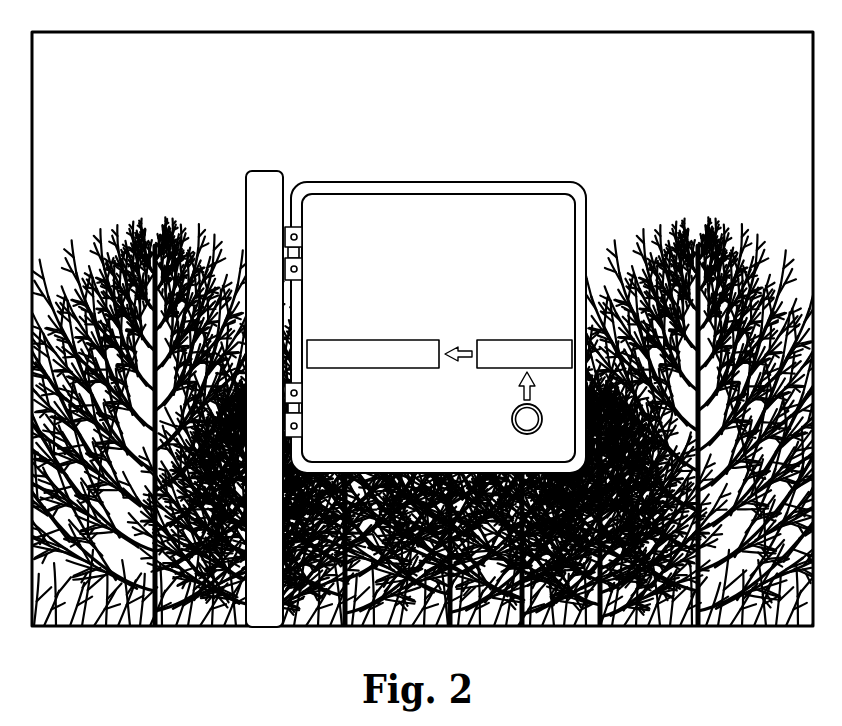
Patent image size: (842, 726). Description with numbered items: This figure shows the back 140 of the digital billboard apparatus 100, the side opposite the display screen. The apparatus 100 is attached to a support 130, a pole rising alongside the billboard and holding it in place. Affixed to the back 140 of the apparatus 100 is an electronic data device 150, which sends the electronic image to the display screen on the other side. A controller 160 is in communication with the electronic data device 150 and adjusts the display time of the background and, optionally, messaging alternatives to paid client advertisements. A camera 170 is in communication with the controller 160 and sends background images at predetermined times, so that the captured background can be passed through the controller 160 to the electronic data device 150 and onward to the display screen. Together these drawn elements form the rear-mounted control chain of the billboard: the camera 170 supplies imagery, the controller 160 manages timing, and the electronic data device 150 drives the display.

The apparatus 100 is at (408, 118).
The support 130 is at (265, 177).
The back 140 is at (546, 242).
The electronic data device 150 is at (371, 340).
The controller 160 is at (528, 340).
The camera 170 is at (512, 419).